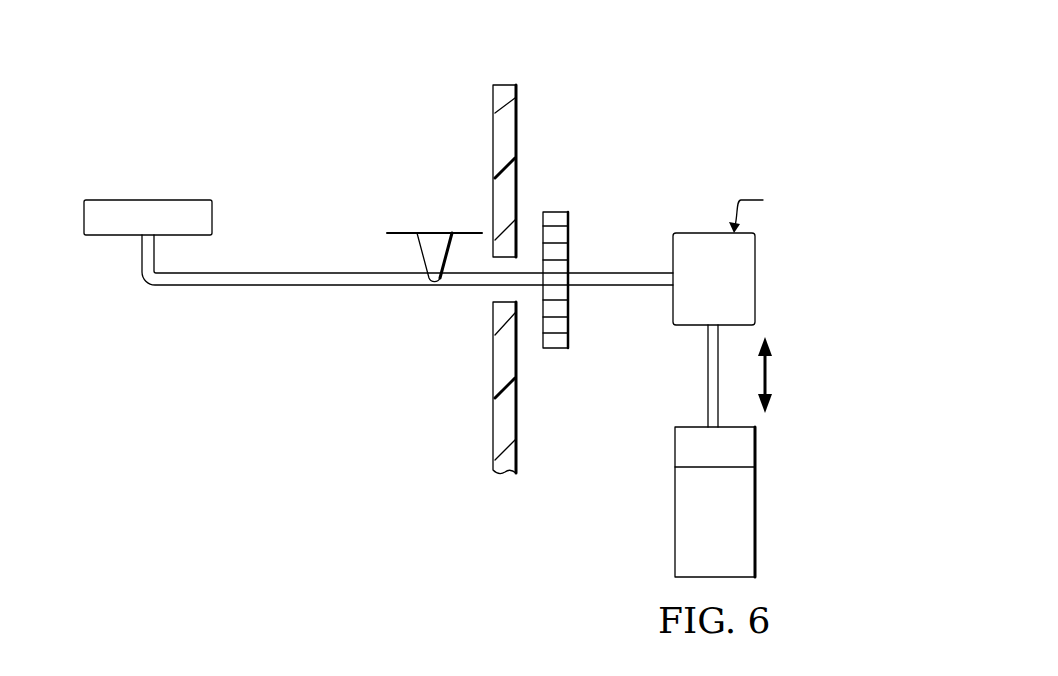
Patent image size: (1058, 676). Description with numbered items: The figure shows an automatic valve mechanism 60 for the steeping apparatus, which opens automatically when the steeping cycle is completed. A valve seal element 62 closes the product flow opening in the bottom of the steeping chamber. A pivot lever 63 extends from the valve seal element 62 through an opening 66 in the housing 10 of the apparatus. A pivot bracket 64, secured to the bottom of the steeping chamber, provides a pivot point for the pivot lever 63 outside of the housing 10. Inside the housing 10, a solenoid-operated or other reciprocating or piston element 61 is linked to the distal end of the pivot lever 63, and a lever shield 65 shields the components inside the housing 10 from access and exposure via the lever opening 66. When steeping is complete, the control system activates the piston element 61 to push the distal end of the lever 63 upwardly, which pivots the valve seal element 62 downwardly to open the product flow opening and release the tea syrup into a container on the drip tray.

The automatic valve mechanism 60 is at (321, 64).
The valve seal element 62 is at (130, 208).
The pivot lever 63 is at (300, 272).
The pivot bracket 64 is at (432, 226).
The housing 10 is at (507, 129).
The opening 66 is at (508, 292).
The lever shield 65 is at (558, 338).
The solenoid-operated or other reciprocating or piston element 61 is at (745, 508).